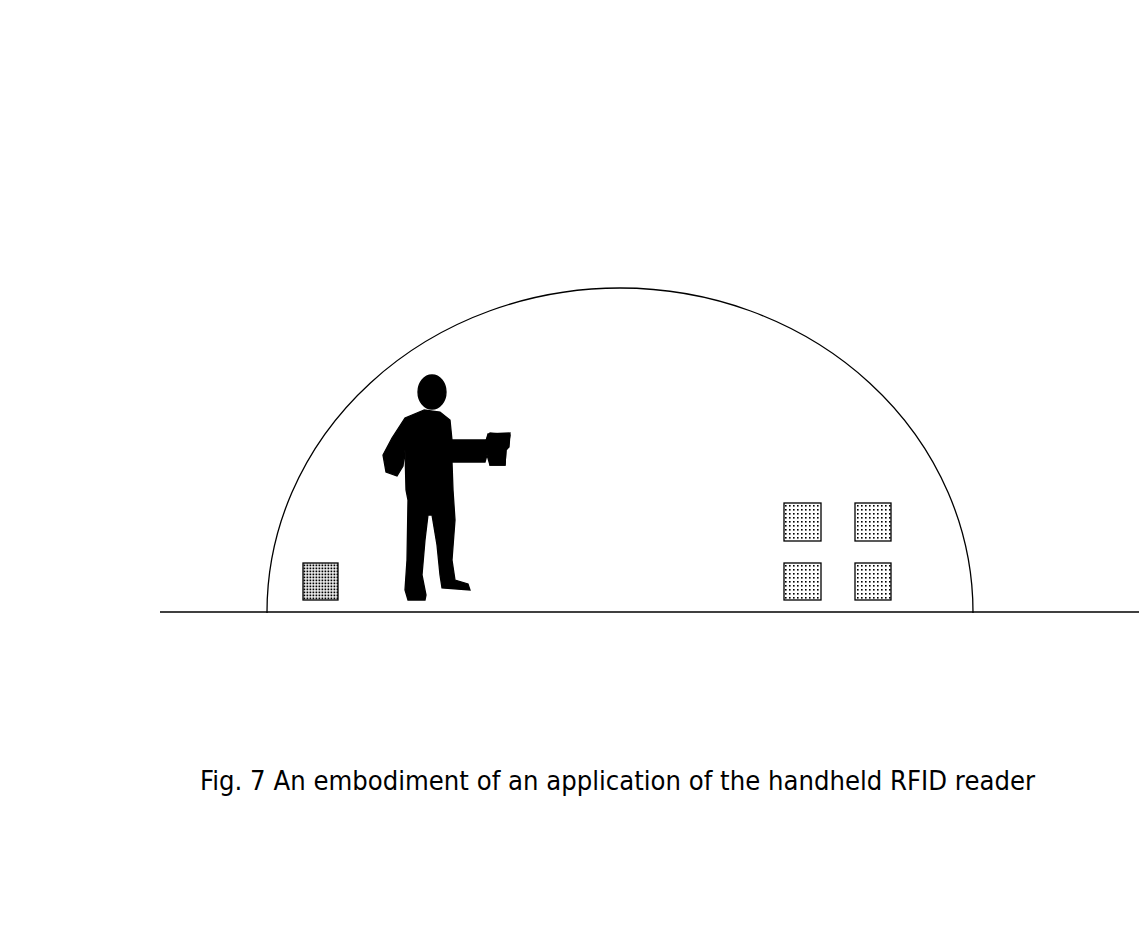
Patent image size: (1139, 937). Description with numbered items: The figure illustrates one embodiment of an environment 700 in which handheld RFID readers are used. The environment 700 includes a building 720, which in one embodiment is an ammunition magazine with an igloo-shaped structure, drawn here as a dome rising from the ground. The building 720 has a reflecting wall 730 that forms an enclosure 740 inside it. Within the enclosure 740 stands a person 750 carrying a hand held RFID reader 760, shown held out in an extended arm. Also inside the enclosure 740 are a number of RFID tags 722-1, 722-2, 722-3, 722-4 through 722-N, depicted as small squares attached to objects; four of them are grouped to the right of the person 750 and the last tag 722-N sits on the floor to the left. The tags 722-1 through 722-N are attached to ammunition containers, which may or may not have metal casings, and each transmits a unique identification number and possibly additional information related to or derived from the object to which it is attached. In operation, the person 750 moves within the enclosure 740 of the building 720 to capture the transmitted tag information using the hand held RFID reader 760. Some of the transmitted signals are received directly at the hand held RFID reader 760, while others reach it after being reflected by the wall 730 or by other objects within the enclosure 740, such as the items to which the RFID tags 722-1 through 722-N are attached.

The environment 700 is at (913, 87).
The building 720 is at (964, 444).
The RFID tag 722-1 is at (815, 502).
The RFID tag 722-2 is at (894, 518).
The RFID tag 722-3 is at (894, 590).
The RFID tag 722-4 is at (803, 601).
The RFID tag 722-N is at (301, 601).
The reflecting wall 730 is at (362, 382).
The enclosure 740 is at (526, 350).
The person 750 is at (444, 592).
The hand held RFID reader 760 is at (504, 466).